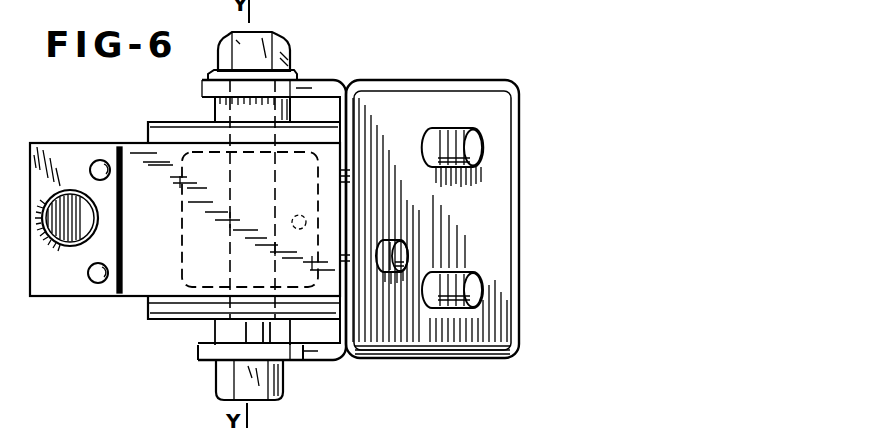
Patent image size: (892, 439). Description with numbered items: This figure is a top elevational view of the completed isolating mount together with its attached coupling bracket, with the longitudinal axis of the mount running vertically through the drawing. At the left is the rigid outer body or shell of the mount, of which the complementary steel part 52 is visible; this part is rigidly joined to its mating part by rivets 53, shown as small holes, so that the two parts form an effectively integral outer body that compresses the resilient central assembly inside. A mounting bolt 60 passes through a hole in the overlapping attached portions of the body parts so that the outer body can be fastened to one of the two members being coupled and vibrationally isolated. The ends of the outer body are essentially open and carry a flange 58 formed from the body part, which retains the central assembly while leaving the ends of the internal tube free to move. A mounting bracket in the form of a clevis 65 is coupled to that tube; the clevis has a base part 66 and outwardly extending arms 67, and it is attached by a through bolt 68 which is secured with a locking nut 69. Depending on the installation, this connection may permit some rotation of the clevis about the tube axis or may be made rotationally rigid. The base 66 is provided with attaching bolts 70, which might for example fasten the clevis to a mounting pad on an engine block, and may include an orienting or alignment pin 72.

The complementary part 52 is at (138, 285).
The rivets 53 is at (91, 160).
The flange 58 is at (182, 319).
The mounting bolts 60 is at (44, 216).
The clevis 65 is at (411, 219).
The base part 66 is at (503, 236).
The arms 67 is at (314, 84).
The through bolt 68 is at (220, 387).
The locking nut 69 is at (264, 30).
The attaching bolts 70 is at (479, 281).
The alignment pin 72 is at (410, 244).